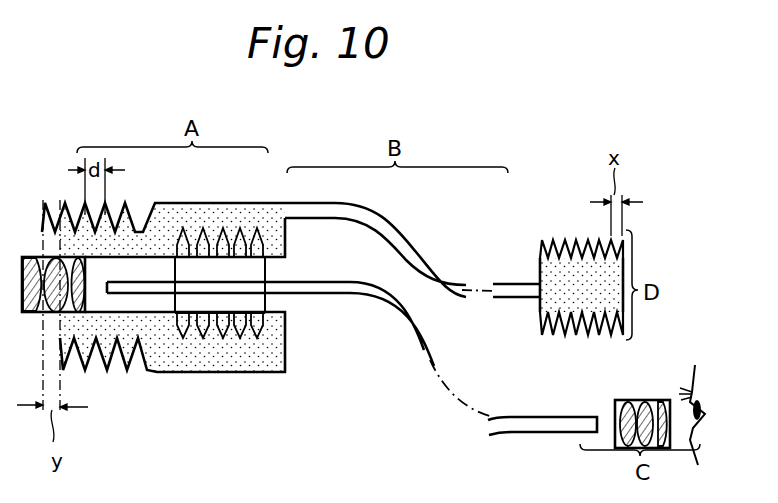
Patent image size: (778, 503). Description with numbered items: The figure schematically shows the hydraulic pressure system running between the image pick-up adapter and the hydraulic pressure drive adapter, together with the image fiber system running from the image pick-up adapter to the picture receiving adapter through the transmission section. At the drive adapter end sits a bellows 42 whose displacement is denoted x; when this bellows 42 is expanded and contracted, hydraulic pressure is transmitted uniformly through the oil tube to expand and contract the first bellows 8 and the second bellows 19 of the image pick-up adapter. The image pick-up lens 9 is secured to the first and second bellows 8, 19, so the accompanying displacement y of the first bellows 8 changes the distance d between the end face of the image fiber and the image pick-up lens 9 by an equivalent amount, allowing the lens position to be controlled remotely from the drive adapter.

The first bellows 8 is at (147, 372).
The image pick-up lens 9 is at (32, 257).
The second bellows 19 is at (233, 340).
The bellows 42 is at (575, 343).